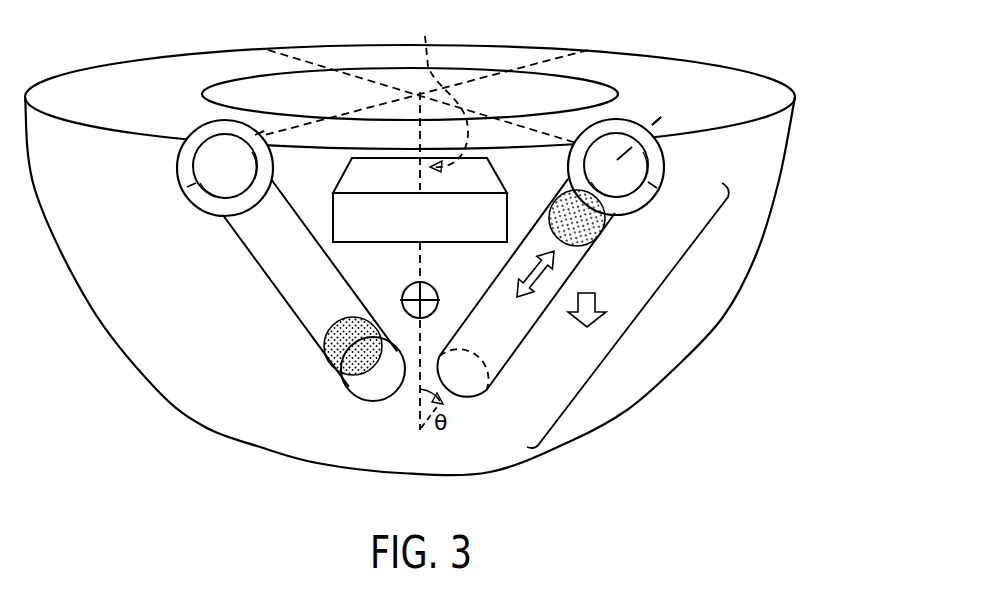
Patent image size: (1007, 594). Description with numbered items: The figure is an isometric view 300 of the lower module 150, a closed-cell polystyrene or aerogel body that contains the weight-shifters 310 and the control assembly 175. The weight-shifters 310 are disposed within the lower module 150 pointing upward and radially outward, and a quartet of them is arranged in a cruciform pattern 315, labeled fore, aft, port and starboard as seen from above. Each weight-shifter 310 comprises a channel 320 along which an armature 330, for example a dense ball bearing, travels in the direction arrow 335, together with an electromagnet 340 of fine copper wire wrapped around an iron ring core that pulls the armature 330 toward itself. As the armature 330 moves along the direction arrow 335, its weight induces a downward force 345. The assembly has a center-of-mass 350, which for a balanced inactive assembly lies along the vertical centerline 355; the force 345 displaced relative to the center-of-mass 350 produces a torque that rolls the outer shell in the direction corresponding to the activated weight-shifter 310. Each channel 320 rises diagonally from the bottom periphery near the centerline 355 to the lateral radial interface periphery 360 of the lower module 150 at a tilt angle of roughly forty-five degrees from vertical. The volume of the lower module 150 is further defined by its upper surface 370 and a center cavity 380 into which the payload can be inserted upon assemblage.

The isometric view 300 is at (700, 53).
The lateral radial interface periphery 360 is at (107, 58).
The upper surface 370 is at (150, 90).
The lower module 150 is at (781, 218).
The cruciform pattern 315 is at (357, 100).
The vertical centerline 355 is at (440, 91).
The center cavity 380 is at (547, 92).
The control assembly 175 is at (420, 200).
The electromagnet 340 is at (183, 200).
The channel 320 is at (277, 290).
The armature 330 is at (349, 375).
The center-of-mass 350 is at (401, 287).
The weight-shifter 310 is at (637, 318).
The downward force 345 is at (580, 326).
The direction arrow 335 is at (520, 297).